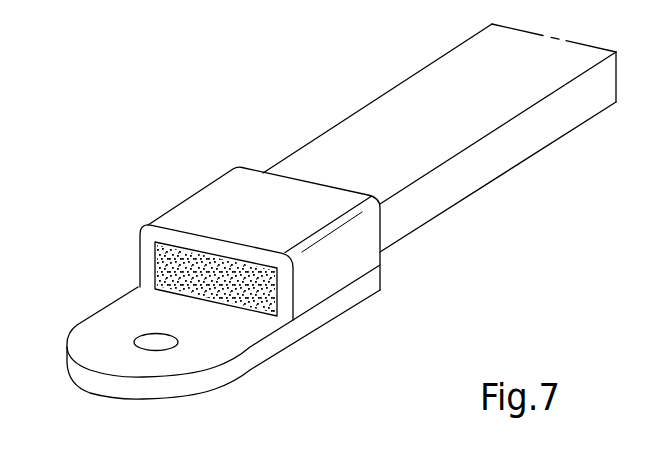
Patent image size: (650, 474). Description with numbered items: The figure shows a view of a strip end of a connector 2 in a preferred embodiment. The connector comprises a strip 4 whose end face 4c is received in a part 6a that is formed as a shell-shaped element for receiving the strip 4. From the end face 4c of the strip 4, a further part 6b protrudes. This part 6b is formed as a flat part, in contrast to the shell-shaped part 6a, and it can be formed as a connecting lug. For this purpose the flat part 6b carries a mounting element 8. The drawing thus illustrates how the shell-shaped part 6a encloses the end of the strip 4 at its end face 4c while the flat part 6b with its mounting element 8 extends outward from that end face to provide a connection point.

The sensor / measuring device 2 is at (72, 105).
The strip 4 is at (417, 98).
The end face of strip 4c is at (157, 275).
The shell-shaped part 6a is at (218, 203).
The flat part 6b is at (258, 353).
The mounting element 8 is at (157, 342).